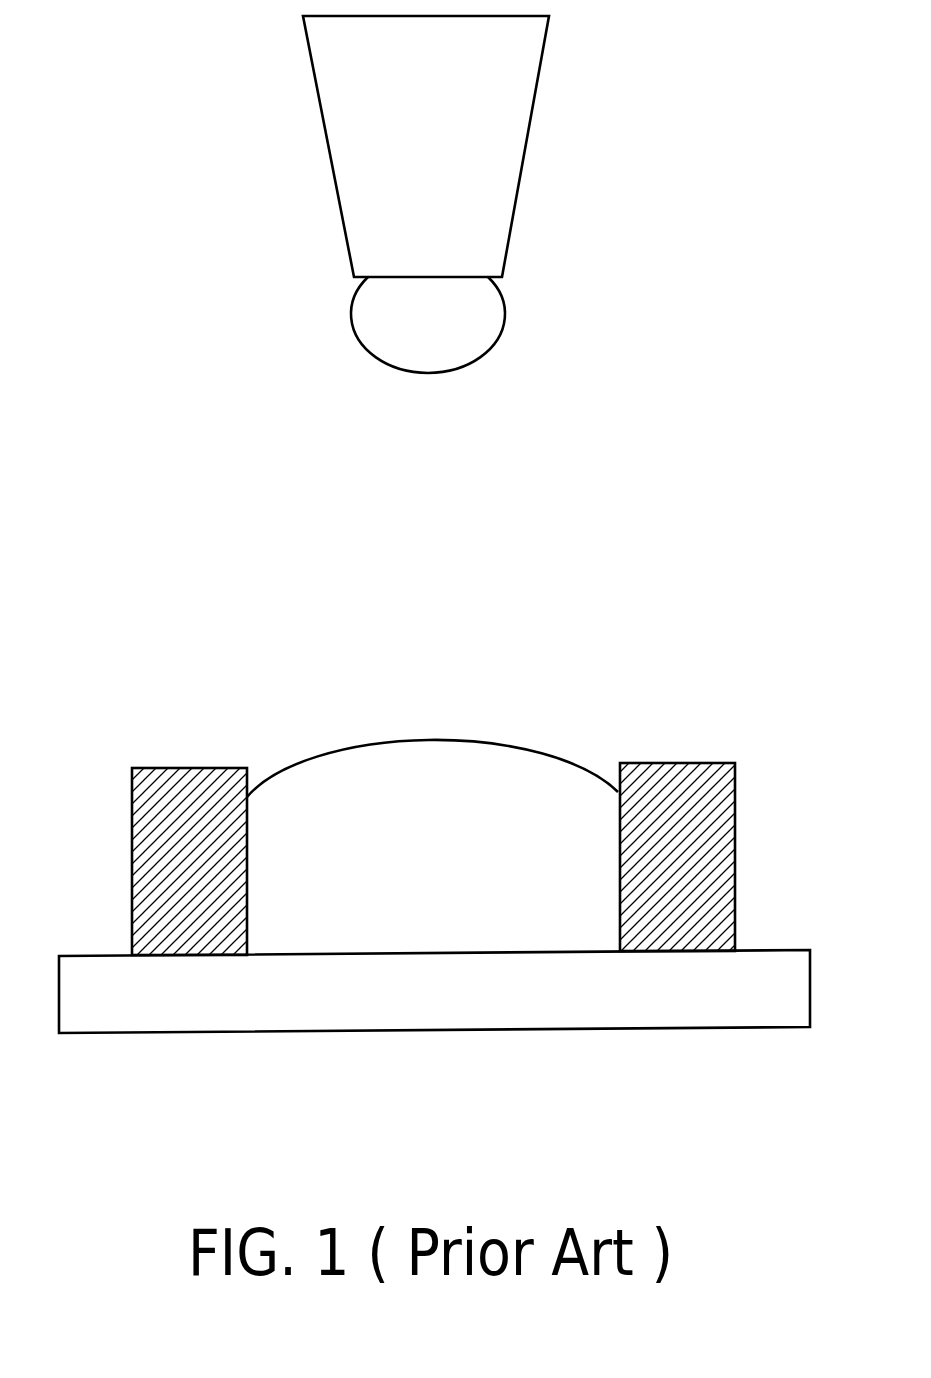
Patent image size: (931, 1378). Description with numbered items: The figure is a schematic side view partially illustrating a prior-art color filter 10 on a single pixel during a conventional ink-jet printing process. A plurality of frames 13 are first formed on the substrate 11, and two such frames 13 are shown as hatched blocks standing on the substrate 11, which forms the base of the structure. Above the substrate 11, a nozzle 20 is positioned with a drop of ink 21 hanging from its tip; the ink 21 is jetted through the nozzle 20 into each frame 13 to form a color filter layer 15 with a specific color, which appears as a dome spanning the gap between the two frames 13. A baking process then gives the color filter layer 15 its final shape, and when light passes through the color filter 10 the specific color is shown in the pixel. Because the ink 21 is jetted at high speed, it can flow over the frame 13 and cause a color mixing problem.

The color filter 10 is at (190, 694).
The substrate 11 is at (698, 1028).
The frame 13 is at (697, 763).
The color filter layer 15 is at (487, 743).
The nozzle 20 is at (531, 122).
The ink 21 is at (493, 343).